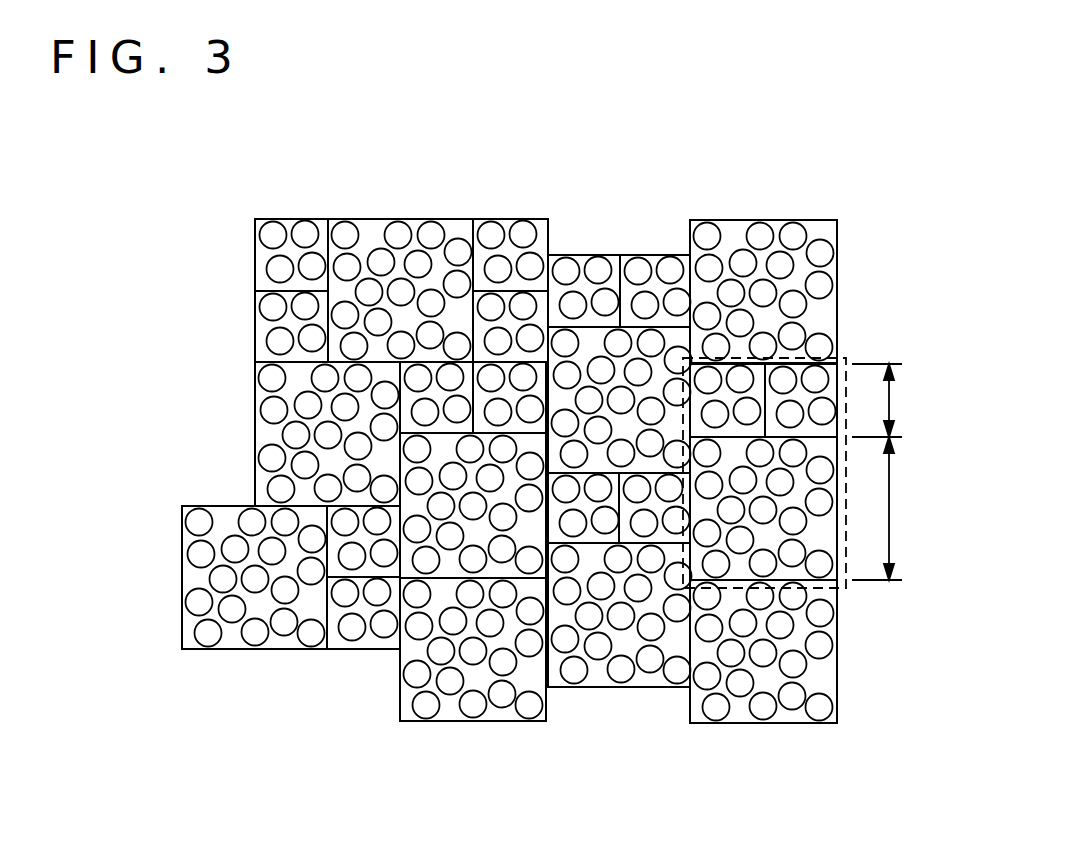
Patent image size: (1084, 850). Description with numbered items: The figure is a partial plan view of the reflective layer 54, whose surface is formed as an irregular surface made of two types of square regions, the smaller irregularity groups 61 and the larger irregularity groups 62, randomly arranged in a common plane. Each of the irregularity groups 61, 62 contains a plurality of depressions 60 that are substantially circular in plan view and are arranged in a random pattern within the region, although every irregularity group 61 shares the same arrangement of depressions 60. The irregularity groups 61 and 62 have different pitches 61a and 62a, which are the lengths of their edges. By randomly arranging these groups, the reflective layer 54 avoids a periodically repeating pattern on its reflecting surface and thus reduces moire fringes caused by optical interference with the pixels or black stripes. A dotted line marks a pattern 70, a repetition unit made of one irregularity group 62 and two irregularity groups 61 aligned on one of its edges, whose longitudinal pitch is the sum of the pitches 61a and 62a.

The reflective layer 54 is at (853, 278).
The depressions 60 is at (275, 232).
The irregularity groups 61 is at (262, 253).
The irregularity groups 62 is at (262, 437).
The pitch 61a is at (903, 400).
The pitch 62a is at (903, 508).
The pattern 70 is at (846, 590).